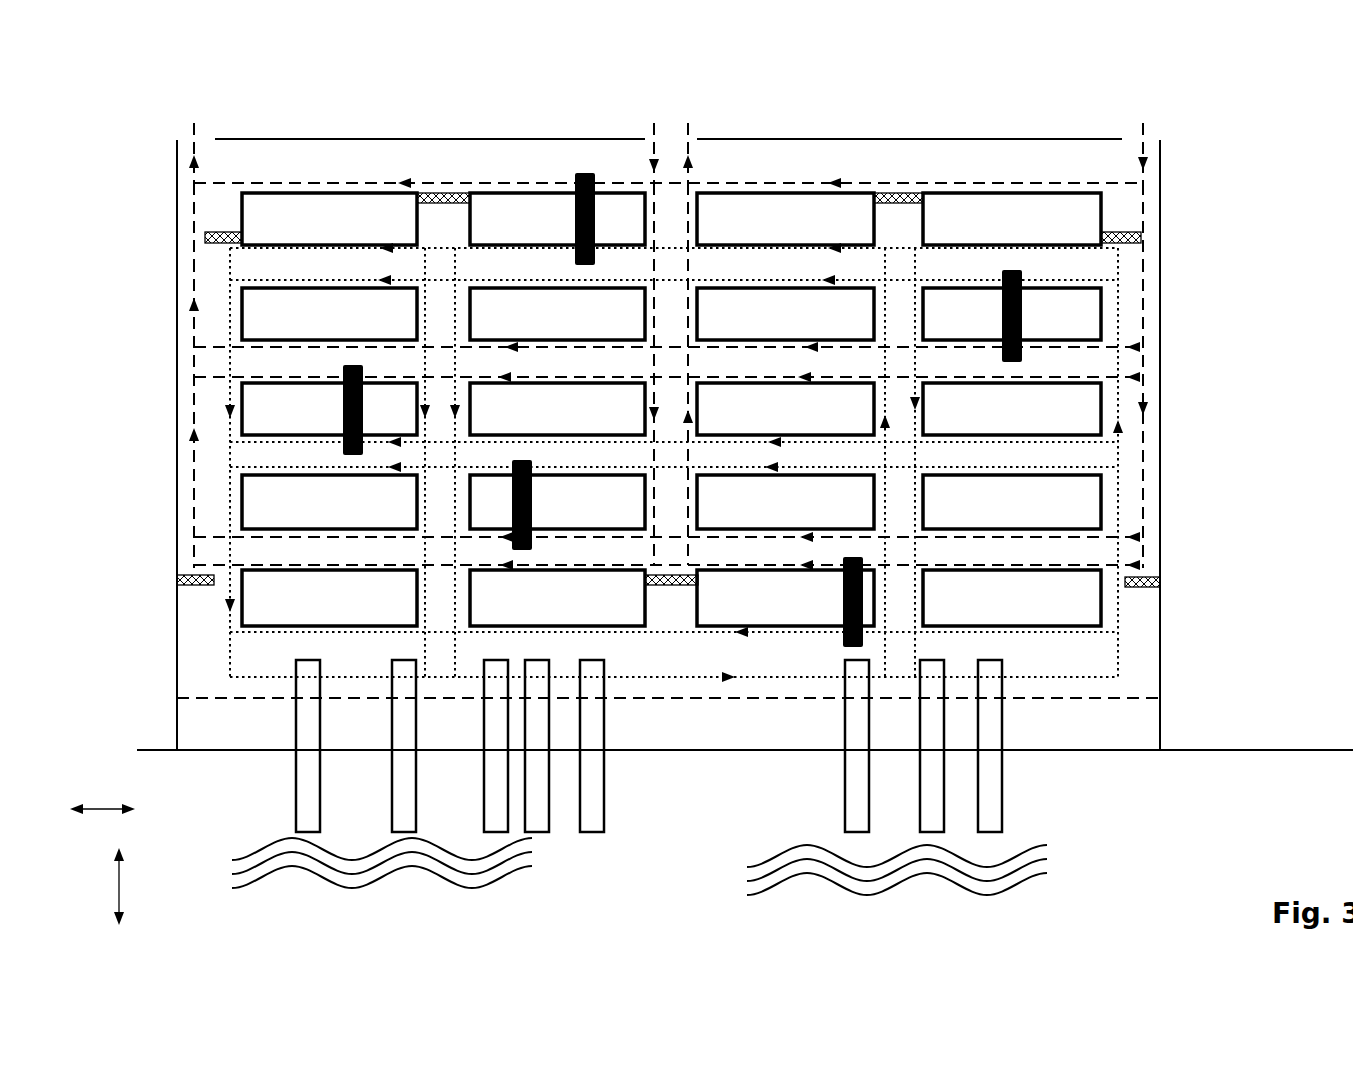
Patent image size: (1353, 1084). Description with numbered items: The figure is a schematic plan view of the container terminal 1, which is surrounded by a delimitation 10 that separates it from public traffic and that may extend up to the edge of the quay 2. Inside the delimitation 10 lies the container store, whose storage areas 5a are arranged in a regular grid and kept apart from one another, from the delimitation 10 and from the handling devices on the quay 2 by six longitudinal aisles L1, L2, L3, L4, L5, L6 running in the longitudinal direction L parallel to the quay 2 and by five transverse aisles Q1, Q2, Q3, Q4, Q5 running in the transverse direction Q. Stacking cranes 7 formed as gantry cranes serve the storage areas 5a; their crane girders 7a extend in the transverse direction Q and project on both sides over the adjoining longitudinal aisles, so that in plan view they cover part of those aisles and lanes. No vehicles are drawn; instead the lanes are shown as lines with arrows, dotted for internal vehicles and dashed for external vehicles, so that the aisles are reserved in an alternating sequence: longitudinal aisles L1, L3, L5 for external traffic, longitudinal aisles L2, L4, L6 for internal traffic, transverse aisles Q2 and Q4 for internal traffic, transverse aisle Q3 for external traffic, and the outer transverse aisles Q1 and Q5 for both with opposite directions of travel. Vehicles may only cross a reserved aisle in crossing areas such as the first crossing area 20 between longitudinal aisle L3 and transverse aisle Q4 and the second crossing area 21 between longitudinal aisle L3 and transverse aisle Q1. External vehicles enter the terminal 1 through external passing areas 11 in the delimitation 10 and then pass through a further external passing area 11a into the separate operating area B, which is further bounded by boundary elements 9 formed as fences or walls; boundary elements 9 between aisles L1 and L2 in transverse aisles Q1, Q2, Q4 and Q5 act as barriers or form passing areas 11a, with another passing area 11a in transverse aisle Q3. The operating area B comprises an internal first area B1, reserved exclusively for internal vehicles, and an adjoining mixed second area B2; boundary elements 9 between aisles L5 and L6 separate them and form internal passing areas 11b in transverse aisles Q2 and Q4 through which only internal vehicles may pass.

The container terminal 1 is at (1178, 115).
The quay 2 is at (237, 720).
The storage area 5a is at (307, 218).
The stacking crane 7 is at (544, 354).
The crane girder 7a is at (584, 170).
The boundary element 9 is at (200, 236).
The delimitation 10 is at (942, 138).
The external passing area 11 is at (205, 128).
The further external passing area 11a is at (188, 246).
The internal passing area 11b is at (220, 595).
The first crossing area 20 is at (901, 335).
The second crossing area 21 is at (205, 356).
The longitudinal aisle L1 is at (1010, 168).
The longitudinal aisle L2 is at (1080, 265).
The longitudinal aisle L3 is at (1090, 360).
The longitudinal aisle L4 is at (1092, 455).
The longitudinal aisle L5 is at (1088, 553).
The longitudinal aisle L6 is at (1108, 688).
The transverse aisle Q1 is at (222, 477).
The transverse aisle Q2 is at (447, 588).
The transverse aisle Q3 is at (665, 600).
The transverse aisle Q4 is at (905, 590).
The transverse aisle Q5 is at (1133, 500).
The operating area B is at (799, 577).
The first area B1 is at (1067, 665).
The second area B2 is at (1133, 323).
The longitudinal direction L is at (102, 797).
The transverse direction Q is at (107, 886).